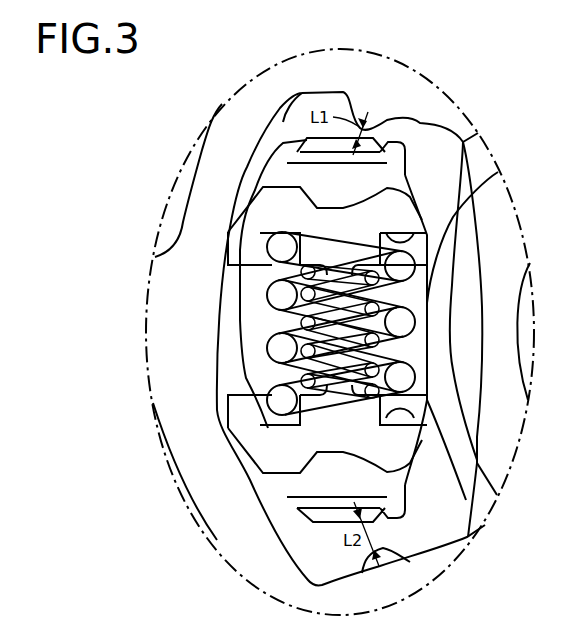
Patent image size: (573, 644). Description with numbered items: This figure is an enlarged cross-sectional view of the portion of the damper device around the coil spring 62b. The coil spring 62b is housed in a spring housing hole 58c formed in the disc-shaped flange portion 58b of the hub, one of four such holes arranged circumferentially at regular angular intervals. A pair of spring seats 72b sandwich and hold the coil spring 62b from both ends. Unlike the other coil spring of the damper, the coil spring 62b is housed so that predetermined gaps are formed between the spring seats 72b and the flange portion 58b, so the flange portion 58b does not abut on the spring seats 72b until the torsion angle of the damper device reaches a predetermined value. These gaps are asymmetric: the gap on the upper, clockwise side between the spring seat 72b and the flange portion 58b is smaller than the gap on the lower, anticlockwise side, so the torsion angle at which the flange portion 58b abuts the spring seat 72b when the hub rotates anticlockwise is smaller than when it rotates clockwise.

The flange portion 58b is at (400, 95).
The spring housing hole 58c is at (263, 146).
The spring seat 72b is at (287, 213).
The coil spring 62b is at (230, 347).